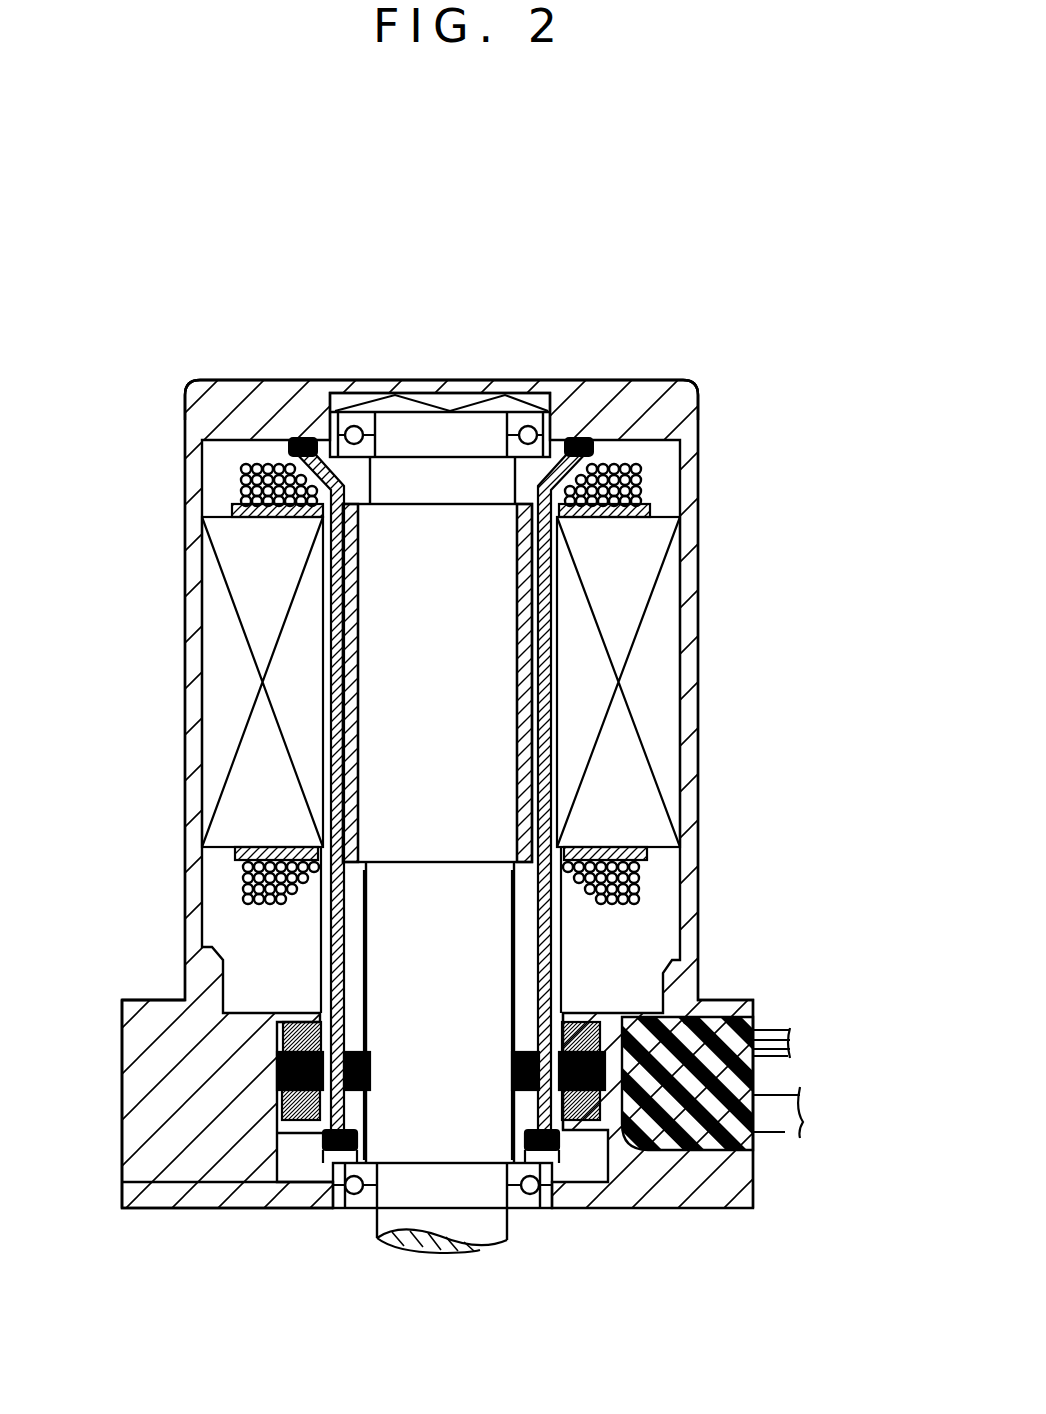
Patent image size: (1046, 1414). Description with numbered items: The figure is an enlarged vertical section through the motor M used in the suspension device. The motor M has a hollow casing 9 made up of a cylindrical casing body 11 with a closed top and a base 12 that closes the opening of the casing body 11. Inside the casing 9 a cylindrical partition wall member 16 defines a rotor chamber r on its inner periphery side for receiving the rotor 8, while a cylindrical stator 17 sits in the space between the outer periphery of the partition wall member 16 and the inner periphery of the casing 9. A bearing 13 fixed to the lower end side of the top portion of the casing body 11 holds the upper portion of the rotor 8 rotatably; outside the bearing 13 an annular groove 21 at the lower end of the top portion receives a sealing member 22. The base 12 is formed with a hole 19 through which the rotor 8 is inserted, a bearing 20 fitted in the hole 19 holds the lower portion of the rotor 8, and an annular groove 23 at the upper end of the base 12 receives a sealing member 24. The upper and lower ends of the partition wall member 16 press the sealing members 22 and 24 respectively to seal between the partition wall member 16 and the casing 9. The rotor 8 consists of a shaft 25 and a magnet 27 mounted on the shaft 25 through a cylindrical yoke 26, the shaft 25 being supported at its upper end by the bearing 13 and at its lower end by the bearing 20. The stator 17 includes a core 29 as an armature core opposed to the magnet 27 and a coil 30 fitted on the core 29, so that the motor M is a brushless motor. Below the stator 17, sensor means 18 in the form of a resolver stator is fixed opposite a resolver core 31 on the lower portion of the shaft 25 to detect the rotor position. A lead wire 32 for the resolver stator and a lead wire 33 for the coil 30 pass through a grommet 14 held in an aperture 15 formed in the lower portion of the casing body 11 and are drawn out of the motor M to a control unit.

The rotor 8 is at (450, 430).
The casing 9 is at (698, 572).
The casing body 11 is at (698, 748).
The base 12 is at (258, 1200).
The bearing 13 is at (540, 412).
The grommet 14 is at (758, 1017).
The aperture 15 is at (706, 1013).
The partition wall member 16 is at (340, 470).
The stator 17 is at (207, 612).
The sensor means 18 is at (277, 1066).
The hole 19 is at (538, 1208).
The bearing 20 is at (343, 1208).
The annular groove 21 is at (296, 442).
The sealing member 22 is at (582, 440).
The annular groove 23 is at (550, 1142).
The sealing member 24 is at (333, 1150).
The shaft 25 is at (372, 918).
The yoke 26 is at (490, 543).
The magnet 27 is at (347, 752).
The core 29 is at (660, 655).
The coil 30 is at (637, 878).
The resolver core 31 is at (508, 1080).
The lead wire 32 is at (757, 1023).
The lead wire 33 is at (787, 1133).
The motor M is at (656, 380).
The rotor chamber r is at (600, 920).